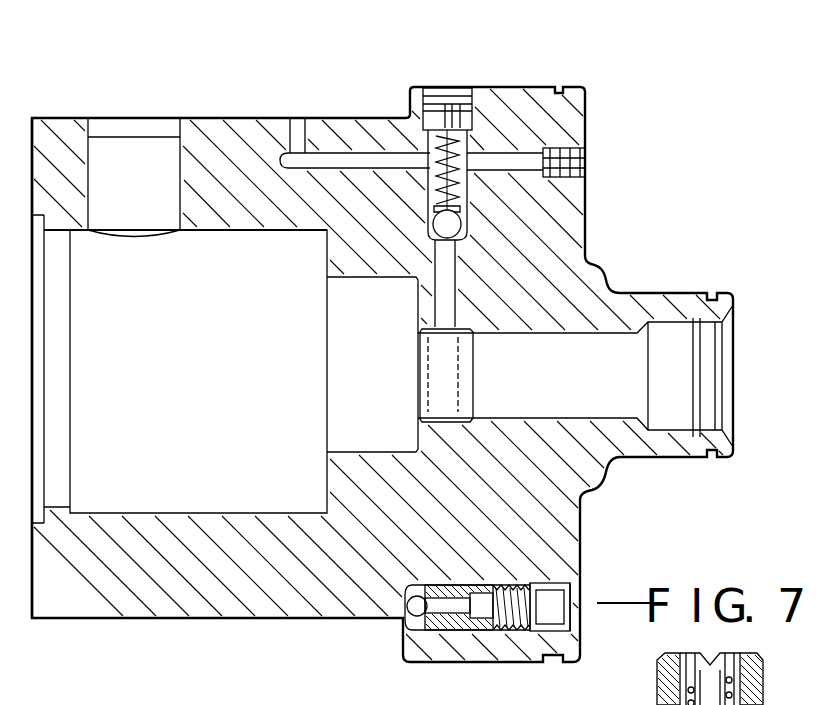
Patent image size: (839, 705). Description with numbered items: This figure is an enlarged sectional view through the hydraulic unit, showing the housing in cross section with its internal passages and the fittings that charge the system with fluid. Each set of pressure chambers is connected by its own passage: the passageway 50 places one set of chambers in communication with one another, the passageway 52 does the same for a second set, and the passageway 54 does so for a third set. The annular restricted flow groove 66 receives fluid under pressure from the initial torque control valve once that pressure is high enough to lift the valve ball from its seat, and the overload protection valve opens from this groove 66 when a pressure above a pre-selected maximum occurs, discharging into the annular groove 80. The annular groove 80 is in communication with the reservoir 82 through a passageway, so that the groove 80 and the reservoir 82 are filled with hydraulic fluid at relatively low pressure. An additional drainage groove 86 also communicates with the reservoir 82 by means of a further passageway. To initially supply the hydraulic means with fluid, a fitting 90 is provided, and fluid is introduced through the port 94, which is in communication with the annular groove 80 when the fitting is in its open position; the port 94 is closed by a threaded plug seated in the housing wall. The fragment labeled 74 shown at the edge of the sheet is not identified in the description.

The passageway 50 is at (104, 118).
The passageway 52 is at (202, 118).
The passageway 54 is at (299, 118).
The annular restricted flow groove 66 is at (347, 118).
The annular groove 80 is at (373, 118).
The reservoir 82 is at (177, 514).
The drainage groove 86 is at (62, 118).
The fitting 90 is at (457, 630).
The port 94 is at (572, 595).
The valve detail fragment 74 is at (766, 695).